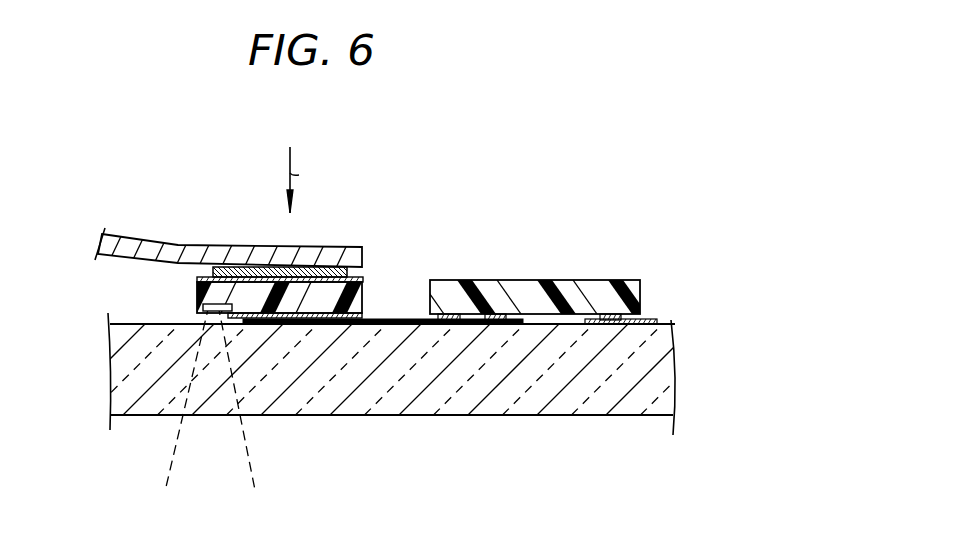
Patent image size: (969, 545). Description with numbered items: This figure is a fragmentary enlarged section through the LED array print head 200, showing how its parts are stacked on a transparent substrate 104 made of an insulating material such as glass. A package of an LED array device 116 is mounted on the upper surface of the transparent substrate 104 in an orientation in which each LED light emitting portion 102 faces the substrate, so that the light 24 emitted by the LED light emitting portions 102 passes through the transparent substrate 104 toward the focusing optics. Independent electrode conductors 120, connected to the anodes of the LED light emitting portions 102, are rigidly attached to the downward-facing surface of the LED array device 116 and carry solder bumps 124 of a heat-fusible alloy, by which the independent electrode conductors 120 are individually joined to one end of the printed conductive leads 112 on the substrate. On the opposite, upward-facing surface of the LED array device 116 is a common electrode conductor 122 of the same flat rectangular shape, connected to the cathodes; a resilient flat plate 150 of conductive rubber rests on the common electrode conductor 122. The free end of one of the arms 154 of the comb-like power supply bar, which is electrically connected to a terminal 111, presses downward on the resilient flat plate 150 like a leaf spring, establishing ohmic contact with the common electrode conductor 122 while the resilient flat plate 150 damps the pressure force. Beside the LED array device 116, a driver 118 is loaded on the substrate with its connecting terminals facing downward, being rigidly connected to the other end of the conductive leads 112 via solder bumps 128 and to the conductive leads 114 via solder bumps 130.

The LED array print head 200 is at (416, 185).
The transparent substrate 104 is at (123, 370).
The light 24 is at (173, 443).
The terminal 111 is at (228, 230).
The arms 154 is at (292, 247).
The resilient flat plate 150 is at (347, 272).
The common electrode conductor 122 is at (247, 276).
The LED array device 116 is at (240, 291).
The LED light emitting portion 102 is at (203, 307).
The independent electrode conductors 120 is at (358, 315).
The conductive leads 112 is at (414, 320).
The solder bumps 124 is at (383, 351).
The driver 118 is at (570, 279).
The solder bumps 128 is at (449, 314).
The solder bumps 130 is at (610, 314).
The conductive leads 114 is at (654, 321).